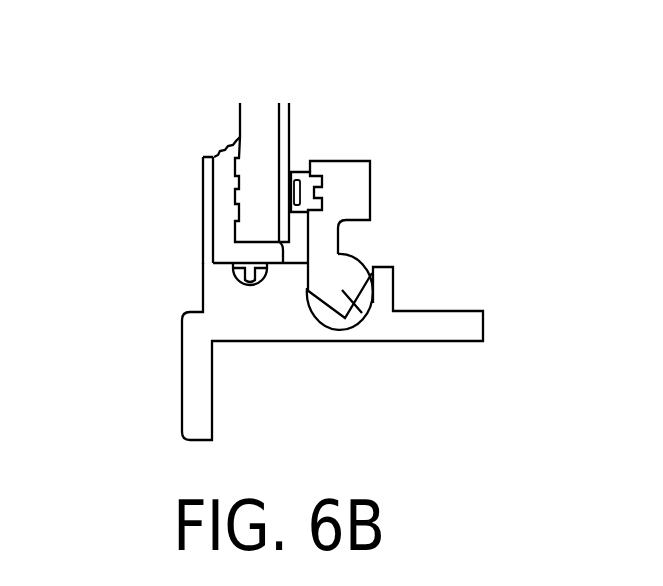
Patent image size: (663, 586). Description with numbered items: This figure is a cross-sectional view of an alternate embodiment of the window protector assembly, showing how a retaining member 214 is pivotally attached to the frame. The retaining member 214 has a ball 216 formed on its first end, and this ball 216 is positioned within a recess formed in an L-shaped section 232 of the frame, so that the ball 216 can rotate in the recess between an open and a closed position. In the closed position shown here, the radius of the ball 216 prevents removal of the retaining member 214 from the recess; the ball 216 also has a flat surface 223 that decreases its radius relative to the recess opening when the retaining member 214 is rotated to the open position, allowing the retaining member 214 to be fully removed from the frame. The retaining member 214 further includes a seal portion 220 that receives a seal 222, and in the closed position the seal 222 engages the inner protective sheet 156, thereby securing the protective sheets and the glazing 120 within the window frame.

The glazing 120 is at (263, 158).
The inner protective sheet 156 is at (285, 115).
The seal 222 is at (295, 172).
The seal portion 220 is at (355, 188).
The retaining member 214 is at (367, 249).
The ball 216 is at (372, 310).
The flat surface 223 is at (325, 305).
The L-shaped section 232 is at (198, 332).